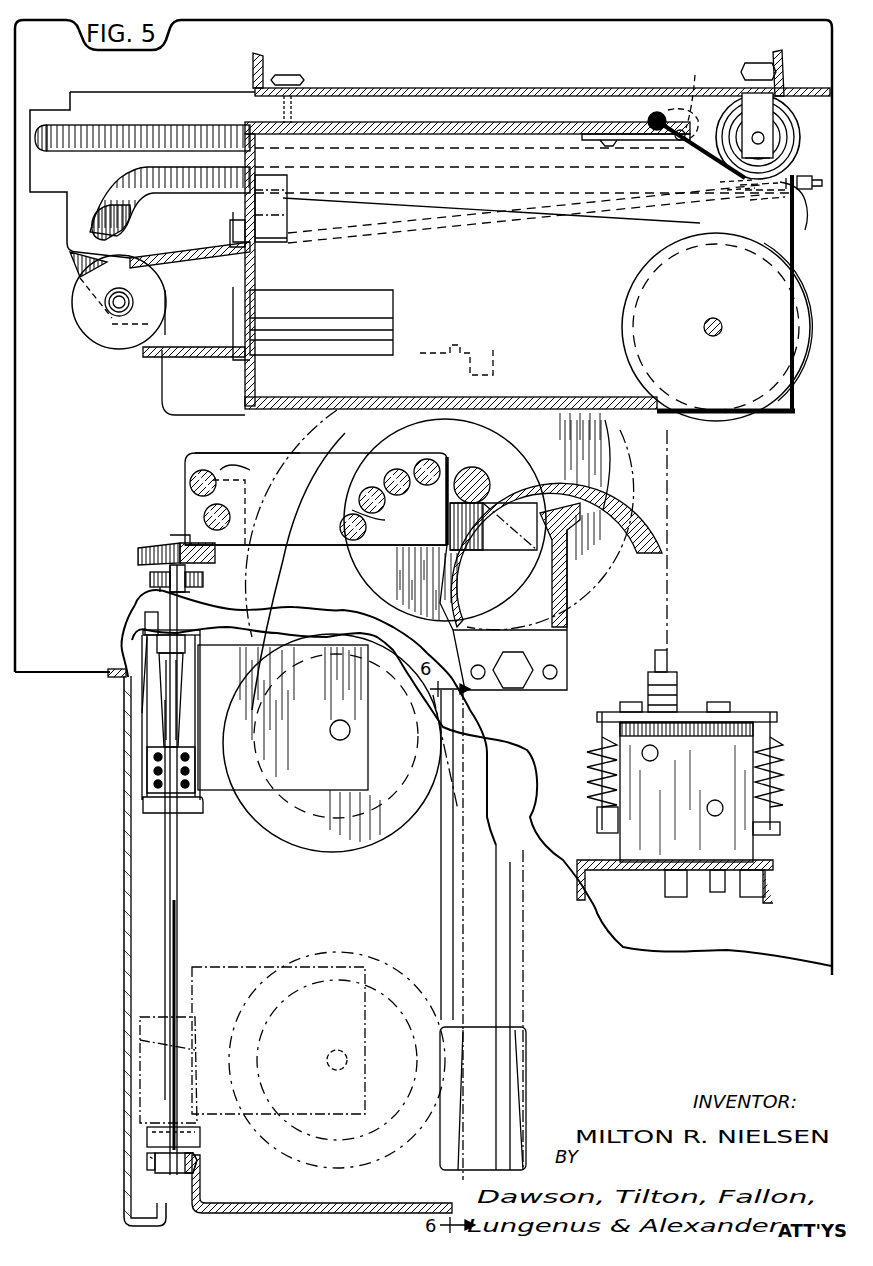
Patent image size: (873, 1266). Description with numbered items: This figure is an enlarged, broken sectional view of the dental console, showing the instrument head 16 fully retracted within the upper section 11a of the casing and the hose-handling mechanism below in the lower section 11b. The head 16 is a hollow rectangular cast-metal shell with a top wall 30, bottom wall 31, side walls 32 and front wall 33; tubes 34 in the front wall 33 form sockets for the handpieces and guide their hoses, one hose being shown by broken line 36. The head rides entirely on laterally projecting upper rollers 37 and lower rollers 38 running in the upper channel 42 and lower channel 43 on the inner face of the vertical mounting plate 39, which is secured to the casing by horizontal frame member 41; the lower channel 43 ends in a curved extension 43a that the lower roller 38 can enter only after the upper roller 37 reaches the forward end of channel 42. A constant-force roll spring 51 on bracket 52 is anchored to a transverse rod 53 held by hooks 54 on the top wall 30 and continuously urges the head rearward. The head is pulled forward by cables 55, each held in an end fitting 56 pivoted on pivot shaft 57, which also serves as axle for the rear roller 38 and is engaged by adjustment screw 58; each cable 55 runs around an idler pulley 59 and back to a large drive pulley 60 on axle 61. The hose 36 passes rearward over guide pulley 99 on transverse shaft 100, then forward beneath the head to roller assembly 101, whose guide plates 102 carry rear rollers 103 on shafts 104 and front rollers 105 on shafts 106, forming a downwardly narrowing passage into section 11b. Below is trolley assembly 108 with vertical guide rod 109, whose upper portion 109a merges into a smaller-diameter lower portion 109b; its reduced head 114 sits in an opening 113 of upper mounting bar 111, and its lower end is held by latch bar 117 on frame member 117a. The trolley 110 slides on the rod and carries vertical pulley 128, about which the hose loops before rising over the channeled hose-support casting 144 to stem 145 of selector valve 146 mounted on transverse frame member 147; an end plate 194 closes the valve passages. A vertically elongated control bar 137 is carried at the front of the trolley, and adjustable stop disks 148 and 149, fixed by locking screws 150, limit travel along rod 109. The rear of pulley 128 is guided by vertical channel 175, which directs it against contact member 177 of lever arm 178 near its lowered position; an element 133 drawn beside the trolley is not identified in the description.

The upper section of casing 11a is at (104, 435).
The lower section of casing 11b is at (124, 878).
The head 16 is at (475, 92).
The top wall 30 is at (410, 122).
The bottom wall 31 is at (338, 397).
The side walls 32 is at (494, 272).
The front wall 33 is at (255, 268).
The tubes 34 is at (289, 214).
The hose 36 is at (420, 207).
The upper roller 37 is at (688, 95).
The lower roller 38 is at (805, 190).
The vertical support plate 39 is at (208, 100).
The horizontal frame member 41 is at (543, 88).
The upper channel 42 is at (143, 130).
The lower channel 43 is at (140, 182).
The curved extension 43a is at (135, 213).
The constant-force roll spring 51 is at (785, 110).
The bracket 52 is at (770, 96).
The transverse rod 53 is at (652, 112).
The hooks 54 is at (632, 140).
The cables 55 is at (180, 357).
The end fitting 56 is at (720, 182).
The pivot shaft 57 is at (735, 225).
The adjustment screw 58 is at (810, 212).
The idler pulley 59 is at (85, 330).
The drive pulley 60 is at (345, 433).
The axle 61 is at (490, 478).
The guide pulley 99 is at (621, 316).
The transverse shaft 100 is at (703, 322).
The roller assembly 101 is at (202, 453).
The vertical guide plates 102 is at (265, 453).
The rear rollers 103 is at (380, 512).
The horizontal shaft 104 is at (427, 460).
The front rollers 105 is at (205, 517).
The horizontal shaft 106 is at (230, 500).
The trolley assembly 108 is at (165, 922).
The vertical guide rod 109 is at (170, 842).
The upper portion of guide rod 109a is at (165, 690).
The lower portion of guide rod 109b is at (170, 990).
The trolley 110 is at (225, 790).
The upper mounting bar 111 is at (160, 545).
The vertical openings 113 is at (180, 545).
The reduced head portion 114 is at (140, 560).
The latch bar 117 is at (180, 1178).
The frame member 117a is at (245, 1203).
The vertical pulley 128 is at (325, 852).
The spring housing 133 is at (180, 748).
The control bar 137 is at (146, 622).
The hose-support casting 144 is at (640, 500).
The valve stem 145 is at (678, 680).
The selector valve 146 is at (780, 836).
The transverse frame member 147 is at (630, 870).
The upper stop member 148 is at (150, 578).
The lower stop member 149 is at (147, 1136).
The locking screws 150 is at (150, 585).
The vertical channel 175 is at (441, 855).
The contact member 177 is at (480, 1078).
The lever arm 178 is at (515, 965).
The end plate 194 is at (620, 845).